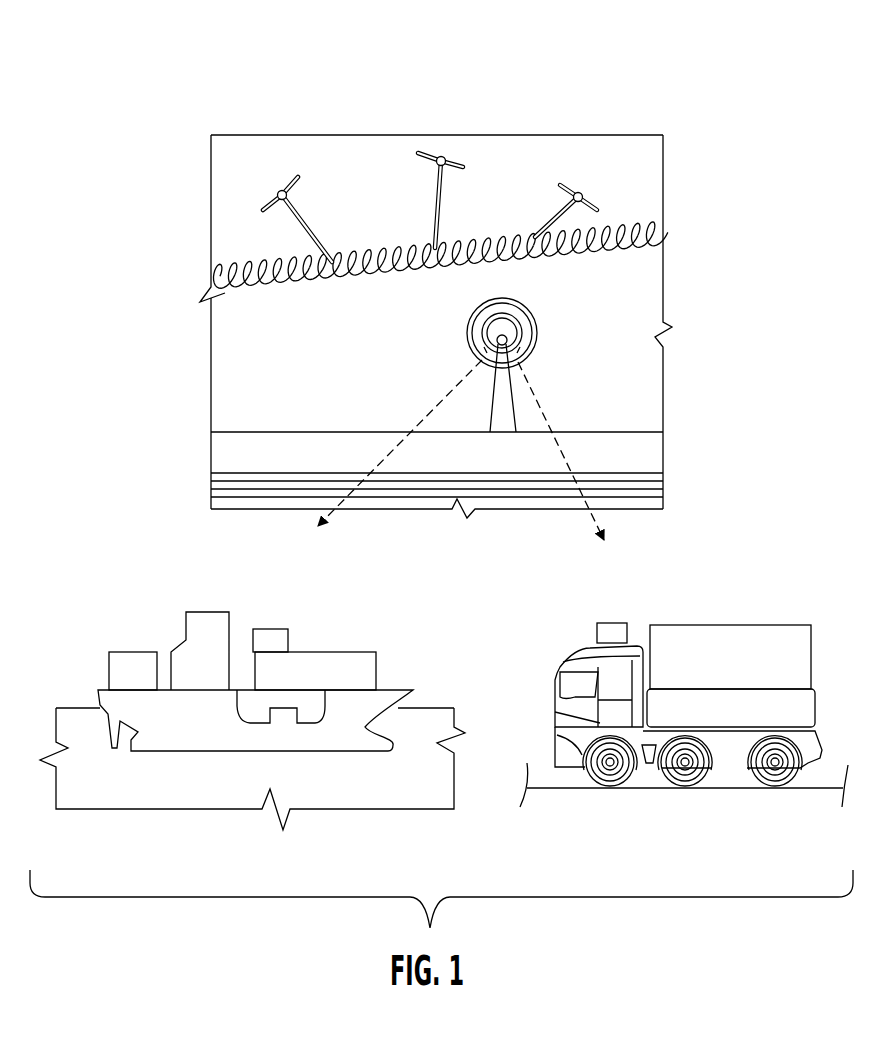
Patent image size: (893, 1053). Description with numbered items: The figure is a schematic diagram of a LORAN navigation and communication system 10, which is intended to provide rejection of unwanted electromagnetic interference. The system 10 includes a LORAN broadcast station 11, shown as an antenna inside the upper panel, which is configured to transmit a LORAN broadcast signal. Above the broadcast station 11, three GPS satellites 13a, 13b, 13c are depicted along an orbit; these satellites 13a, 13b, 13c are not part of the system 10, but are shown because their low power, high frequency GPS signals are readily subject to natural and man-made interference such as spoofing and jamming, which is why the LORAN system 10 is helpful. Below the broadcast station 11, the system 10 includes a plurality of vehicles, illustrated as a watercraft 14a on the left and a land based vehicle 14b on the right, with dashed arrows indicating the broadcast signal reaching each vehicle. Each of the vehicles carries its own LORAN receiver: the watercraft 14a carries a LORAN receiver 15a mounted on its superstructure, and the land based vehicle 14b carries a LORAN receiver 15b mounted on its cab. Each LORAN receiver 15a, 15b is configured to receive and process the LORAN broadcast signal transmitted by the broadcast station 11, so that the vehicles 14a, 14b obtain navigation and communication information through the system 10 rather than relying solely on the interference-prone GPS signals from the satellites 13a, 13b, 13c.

The LORAN navigation and communication system 10 is at (693, 56).
The LORAN broadcast station 11 is at (490, 413).
The GPS satellite 13a is at (582, 196).
The GPS satellite 13b is at (440, 158).
The GPS satellite 13c is at (278, 193).
The watercraft 14a is at (350, 606).
The land based vehicle 14b is at (725, 592).
The LORAN receiver 15a is at (270, 637).
The LORAN receiver 15b is at (611, 628).